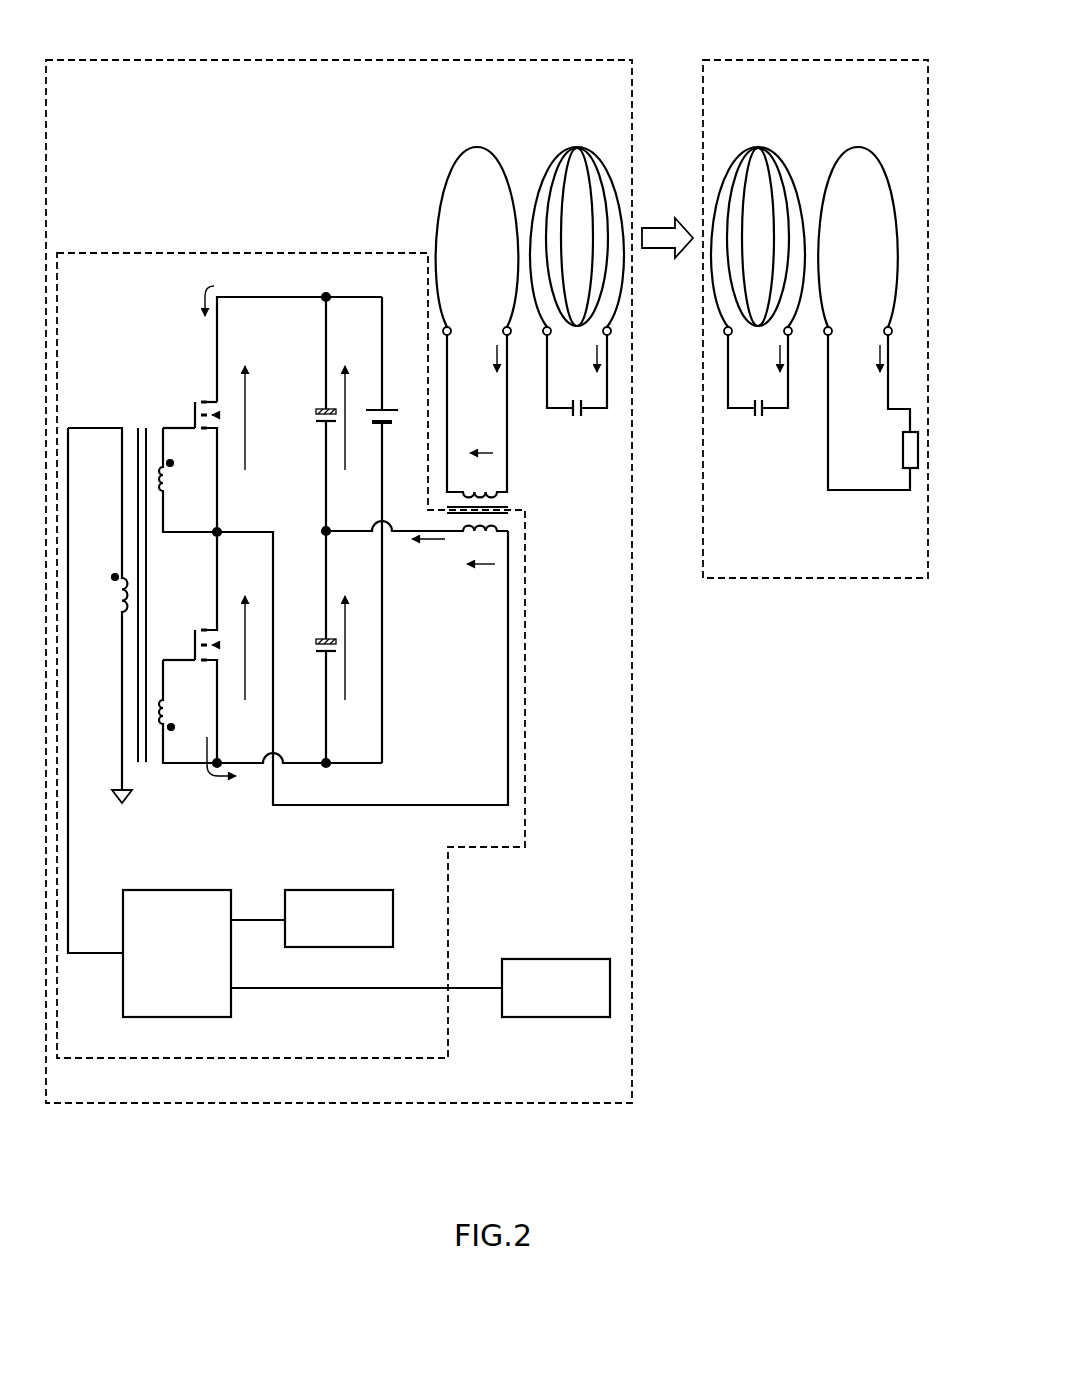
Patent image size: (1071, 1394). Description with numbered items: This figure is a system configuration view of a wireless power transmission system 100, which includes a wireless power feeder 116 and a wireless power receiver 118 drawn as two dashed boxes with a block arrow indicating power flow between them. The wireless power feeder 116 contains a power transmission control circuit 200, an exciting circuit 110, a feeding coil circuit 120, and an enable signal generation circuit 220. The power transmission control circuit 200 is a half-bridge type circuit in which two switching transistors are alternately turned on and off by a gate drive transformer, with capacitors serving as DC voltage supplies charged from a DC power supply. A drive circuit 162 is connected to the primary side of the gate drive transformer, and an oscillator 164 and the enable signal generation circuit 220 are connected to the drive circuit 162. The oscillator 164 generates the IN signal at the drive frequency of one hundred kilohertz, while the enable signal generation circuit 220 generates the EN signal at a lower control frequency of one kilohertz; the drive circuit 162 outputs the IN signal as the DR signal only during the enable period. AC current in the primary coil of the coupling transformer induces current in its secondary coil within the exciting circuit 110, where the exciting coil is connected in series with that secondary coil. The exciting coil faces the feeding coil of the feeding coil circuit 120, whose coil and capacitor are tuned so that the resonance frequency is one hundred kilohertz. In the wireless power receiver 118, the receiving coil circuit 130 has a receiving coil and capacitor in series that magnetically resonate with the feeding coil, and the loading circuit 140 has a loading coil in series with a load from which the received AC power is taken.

The wireless power transmission system 100 is at (487, 585).
The exciting circuit 110 is at (437, 130).
The wireless power feeder 116 is at (345, 60).
The wireless power receiver 118 is at (827, 60).
The feeding coil circuit 120 is at (532, 130).
The receiving coil circuit 130 is at (724, 430).
The loading circuit 140 is at (820, 508).
The drive circuit 162 is at (176, 890).
The oscillator 164 is at (340, 890).
The power transmission control circuit 200 is at (258, 253).
The enable signal generation circuit 220 is at (558, 959).